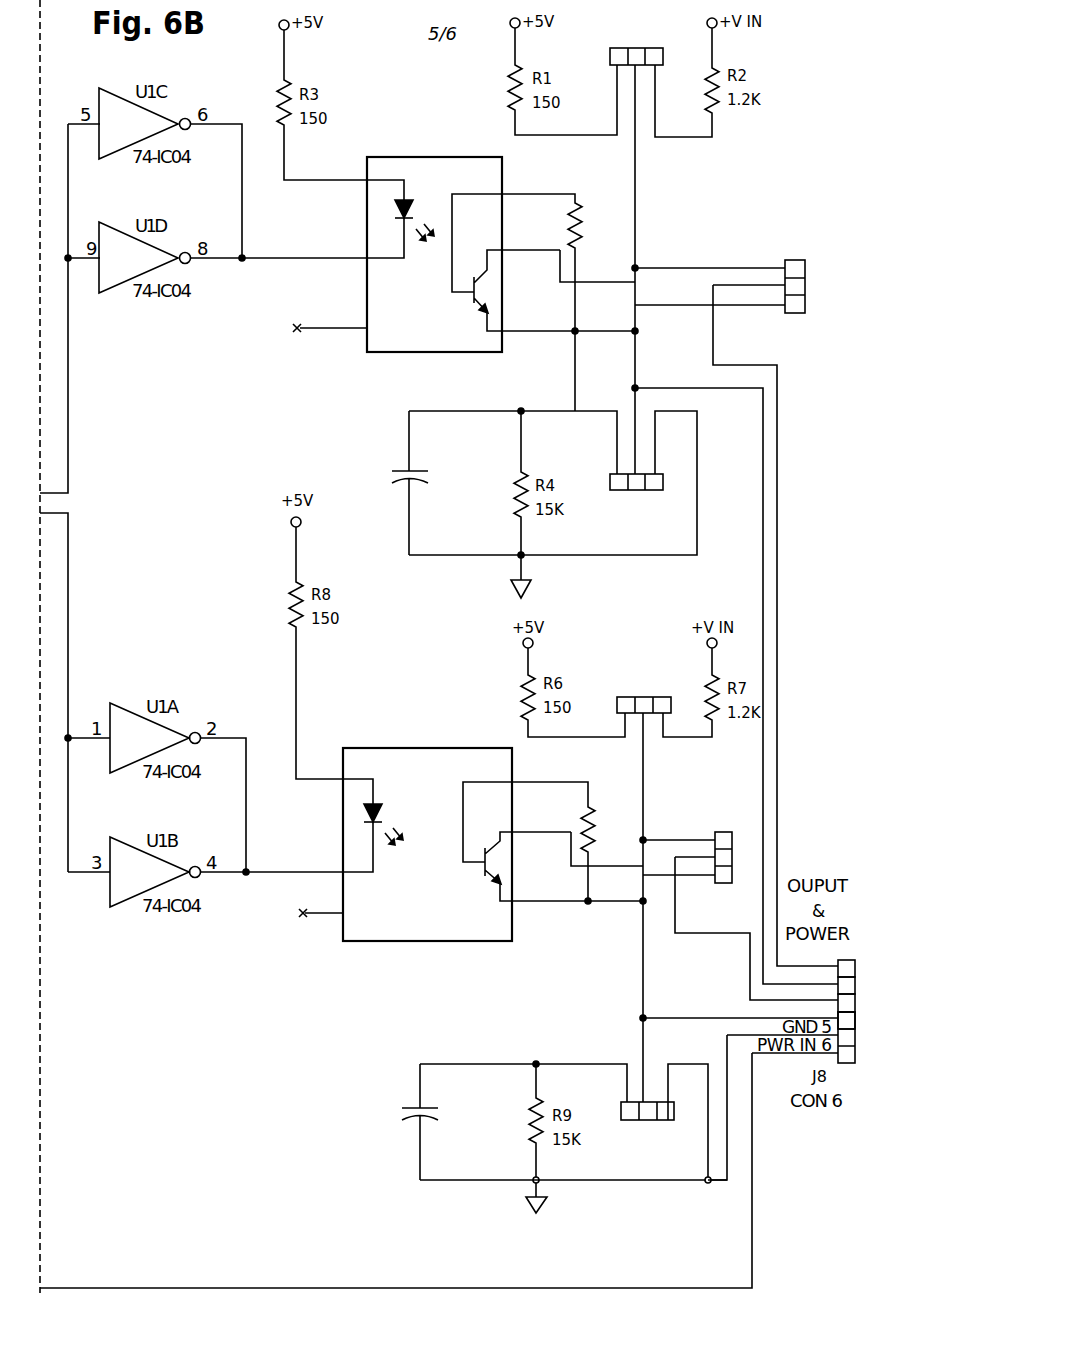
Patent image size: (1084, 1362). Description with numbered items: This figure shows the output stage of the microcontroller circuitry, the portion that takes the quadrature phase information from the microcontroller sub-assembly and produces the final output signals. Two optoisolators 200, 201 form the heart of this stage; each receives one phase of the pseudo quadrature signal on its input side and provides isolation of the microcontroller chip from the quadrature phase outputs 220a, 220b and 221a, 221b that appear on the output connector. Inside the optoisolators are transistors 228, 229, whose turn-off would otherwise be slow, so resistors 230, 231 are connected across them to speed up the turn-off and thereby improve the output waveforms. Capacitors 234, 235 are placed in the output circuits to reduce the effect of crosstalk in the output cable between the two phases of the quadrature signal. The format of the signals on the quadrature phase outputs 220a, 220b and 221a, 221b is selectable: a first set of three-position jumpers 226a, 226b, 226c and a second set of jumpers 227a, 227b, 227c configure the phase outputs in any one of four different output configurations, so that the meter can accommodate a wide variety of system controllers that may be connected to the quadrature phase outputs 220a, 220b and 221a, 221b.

The optoisolator 200 is at (443, 157).
The optoisolator 201 is at (429, 748).
The jumper 226a is at (609, 57).
The jumper 226b is at (797, 258).
The jumper 226c is at (608, 482).
The jumper 227a is at (617, 705).
The jumper 227b is at (723, 831).
The jumper 227c is at (620, 1110).
The transistor 228 is at (474, 297).
The transistor 229 is at (483, 868).
The resistor 230 is at (578, 200).
The resistor 231 is at (584, 806).
The capacitor 234 is at (406, 468).
The capacitor 235 is at (413, 1107).
The quadrature phase output 220a is at (856, 980).
The quadrature phase output 220b is at (857, 966).
The quadrature phase output 221a is at (856, 1018).
The quadrature phase output 221b is at (856, 1000).